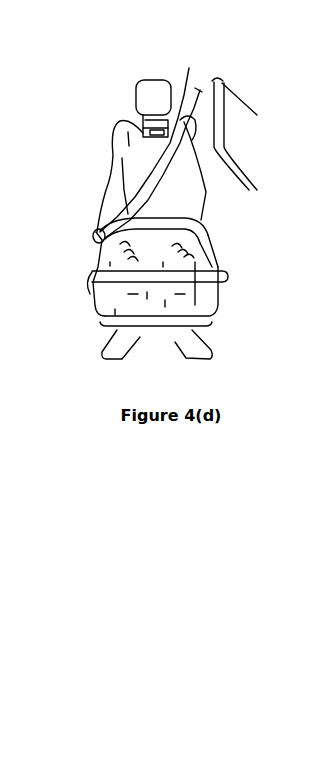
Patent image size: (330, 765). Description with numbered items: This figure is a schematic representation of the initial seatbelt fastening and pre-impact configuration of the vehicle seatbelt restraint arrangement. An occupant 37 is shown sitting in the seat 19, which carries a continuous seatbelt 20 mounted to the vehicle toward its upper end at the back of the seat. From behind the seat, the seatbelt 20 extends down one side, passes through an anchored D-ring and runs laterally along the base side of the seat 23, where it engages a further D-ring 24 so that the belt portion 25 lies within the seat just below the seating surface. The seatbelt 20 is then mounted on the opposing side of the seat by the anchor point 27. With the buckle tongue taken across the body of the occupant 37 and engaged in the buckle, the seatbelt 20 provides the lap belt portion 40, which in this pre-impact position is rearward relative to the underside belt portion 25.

The seat 19 is at (137, 74).
The seatbelt 20 is at (189, 68).
The occupant 37 is at (110, 170).
The lap belt portion 40 is at (202, 198).
The base side of the seat 23 is at (215, 243).
The further D-ring 24 is at (226, 277).
The anchor point 27 is at (88, 285).
The belt portion 25 is at (203, 278).